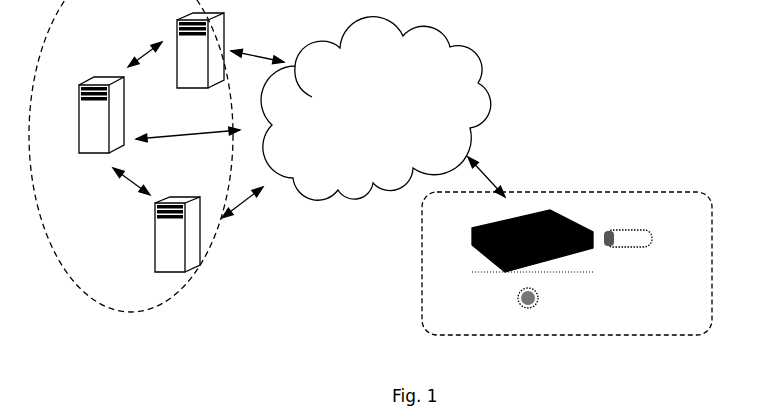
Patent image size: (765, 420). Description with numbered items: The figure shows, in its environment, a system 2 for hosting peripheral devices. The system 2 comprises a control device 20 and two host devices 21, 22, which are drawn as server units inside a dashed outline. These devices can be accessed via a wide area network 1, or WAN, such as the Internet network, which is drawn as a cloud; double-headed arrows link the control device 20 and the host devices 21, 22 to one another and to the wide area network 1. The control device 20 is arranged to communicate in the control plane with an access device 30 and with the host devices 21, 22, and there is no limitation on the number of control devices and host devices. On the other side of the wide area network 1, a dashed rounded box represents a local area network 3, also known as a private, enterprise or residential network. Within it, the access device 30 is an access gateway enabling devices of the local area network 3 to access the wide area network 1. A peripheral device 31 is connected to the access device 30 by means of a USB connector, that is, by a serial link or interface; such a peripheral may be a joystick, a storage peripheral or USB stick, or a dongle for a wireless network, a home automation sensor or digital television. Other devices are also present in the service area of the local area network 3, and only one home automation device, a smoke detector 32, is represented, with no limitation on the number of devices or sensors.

The wide area network 1 is at (338, 190).
The system for hosting peripheral devices 2 is at (97, 300).
The control device 20 is at (90, 153).
The host device 21 is at (192, 88).
The host device 22 is at (165, 272).
The local area network 3 is at (425, 320).
The access device 30 is at (472, 243).
The peripheral device 31 is at (643, 250).
The smoke detector 32 is at (518, 298).